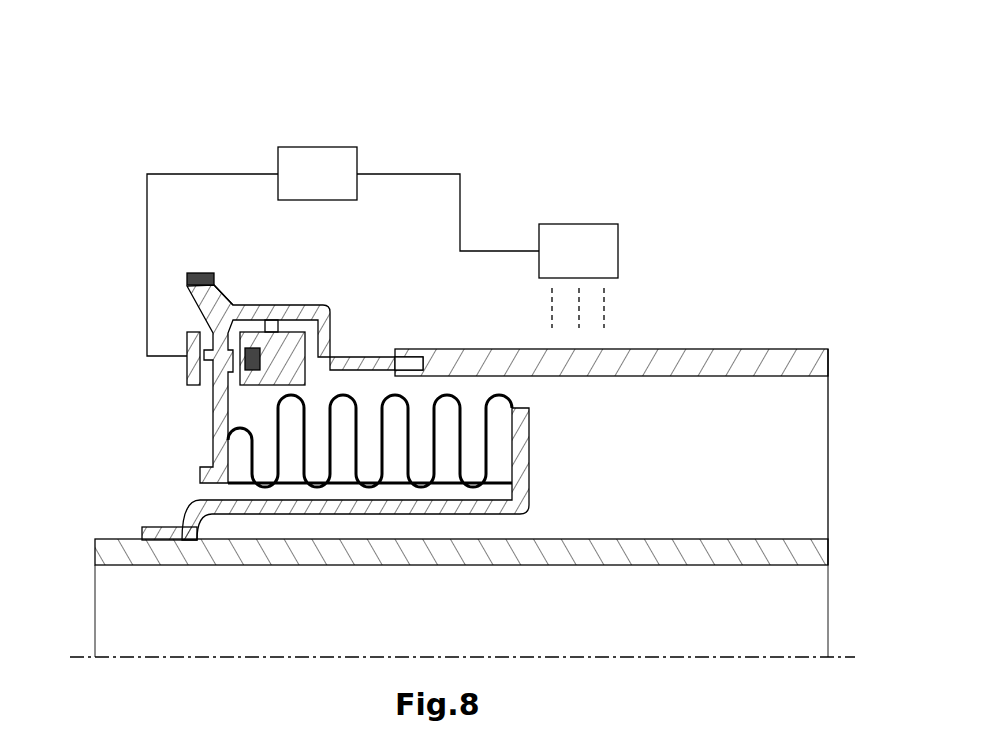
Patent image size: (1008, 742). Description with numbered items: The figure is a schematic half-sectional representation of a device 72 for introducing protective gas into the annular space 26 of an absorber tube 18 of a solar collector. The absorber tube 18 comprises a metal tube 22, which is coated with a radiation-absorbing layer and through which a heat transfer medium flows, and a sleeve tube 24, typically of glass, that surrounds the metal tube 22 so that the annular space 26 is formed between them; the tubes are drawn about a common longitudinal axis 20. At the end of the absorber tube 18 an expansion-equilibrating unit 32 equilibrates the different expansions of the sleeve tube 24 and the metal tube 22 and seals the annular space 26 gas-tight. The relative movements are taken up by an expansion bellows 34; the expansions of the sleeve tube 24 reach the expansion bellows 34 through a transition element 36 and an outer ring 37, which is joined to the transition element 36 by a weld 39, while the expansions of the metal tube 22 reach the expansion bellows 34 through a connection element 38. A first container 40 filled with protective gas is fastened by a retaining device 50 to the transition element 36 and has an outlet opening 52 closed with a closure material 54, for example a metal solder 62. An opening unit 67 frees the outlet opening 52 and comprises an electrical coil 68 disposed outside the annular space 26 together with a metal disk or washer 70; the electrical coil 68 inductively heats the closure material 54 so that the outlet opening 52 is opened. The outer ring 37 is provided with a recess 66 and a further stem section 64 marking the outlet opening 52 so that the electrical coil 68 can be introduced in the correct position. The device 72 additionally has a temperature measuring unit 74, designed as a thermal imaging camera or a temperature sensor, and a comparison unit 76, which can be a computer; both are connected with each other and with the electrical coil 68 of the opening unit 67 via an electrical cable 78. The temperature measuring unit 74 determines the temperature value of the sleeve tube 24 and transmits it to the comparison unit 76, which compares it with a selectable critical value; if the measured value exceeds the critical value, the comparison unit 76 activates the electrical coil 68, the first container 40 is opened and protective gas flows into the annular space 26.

The absorber tube 18 is at (712, 220).
The longitudinal axis 20 is at (140, 655).
The metal tube 22 is at (665, 539).
The sleeve tube 24 is at (620, 349).
The annular space 26 is at (731, 446).
The expansion-equilibrating unit 32 is at (170, 232).
The expansion bellows 34 is at (474, 386).
The transition element 36 is at (400, 357).
The outer ring 37 is at (289, 375).
The connection element 38 is at (530, 478).
The weld 39 is at (200, 272).
The first container 40 is at (306, 346).
The retaining device 50 is at (271, 318).
The outlet opening 52 is at (330, 369).
The closure material 54 is at (330, 369).
The metal solder 62 is at (330, 369).
The stem section 64 is at (151, 405).
The recess 66 is at (210, 392).
The opening unit 67 is at (172, 310).
The electrical coil 68 is at (187, 362).
The metal disk or washer 70 is at (238, 305).
The device for introducing protective gas 72 is at (441, 92).
The temperature measuring unit 74 is at (590, 261).
The comparison unit 76 is at (330, 186).
The electrical cable 78 is at (183, 174).